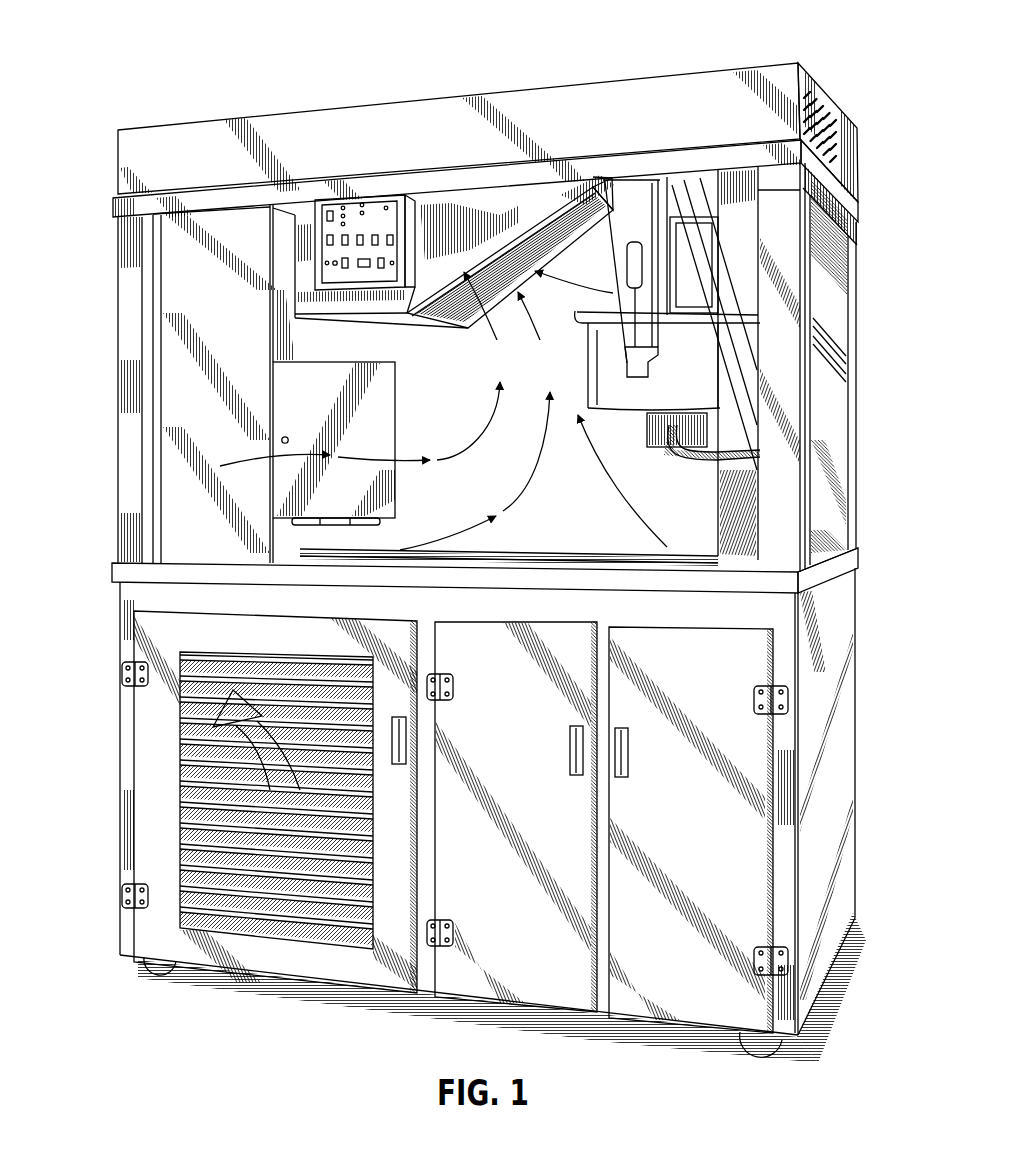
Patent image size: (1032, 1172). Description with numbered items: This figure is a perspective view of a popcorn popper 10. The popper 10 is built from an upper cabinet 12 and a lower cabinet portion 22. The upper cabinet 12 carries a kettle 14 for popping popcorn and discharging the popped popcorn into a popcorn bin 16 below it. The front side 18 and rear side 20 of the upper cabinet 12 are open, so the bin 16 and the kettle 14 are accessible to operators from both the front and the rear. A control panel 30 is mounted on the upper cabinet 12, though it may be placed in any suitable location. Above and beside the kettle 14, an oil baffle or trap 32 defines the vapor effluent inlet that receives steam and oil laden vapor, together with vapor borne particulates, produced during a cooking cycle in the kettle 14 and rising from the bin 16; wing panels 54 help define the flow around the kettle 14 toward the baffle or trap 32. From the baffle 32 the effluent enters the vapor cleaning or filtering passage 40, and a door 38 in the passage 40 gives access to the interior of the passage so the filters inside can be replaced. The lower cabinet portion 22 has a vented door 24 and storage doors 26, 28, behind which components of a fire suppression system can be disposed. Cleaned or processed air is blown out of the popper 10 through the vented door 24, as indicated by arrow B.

The popper 10 is at (171, 57).
The upper cabinet 12 is at (116, 343).
The kettle 14 is at (700, 384).
The popcorn bin 16 is at (578, 545).
The front side 18 is at (430, 491).
The rear side 20 is at (600, 252).
The lower cabinet portion 22 is at (116, 770).
The vented door 24 is at (172, 818).
The storage door 26 is at (521, 754).
The storage door 28 is at (695, 820).
The control panel 30 is at (366, 226).
The oil baffle or trap 32 is at (510, 238).
The door 38 is at (320, 403).
The passage 40 is at (232, 320).
The wing panels 54 is at (718, 198).
The arrow B is at (228, 731).